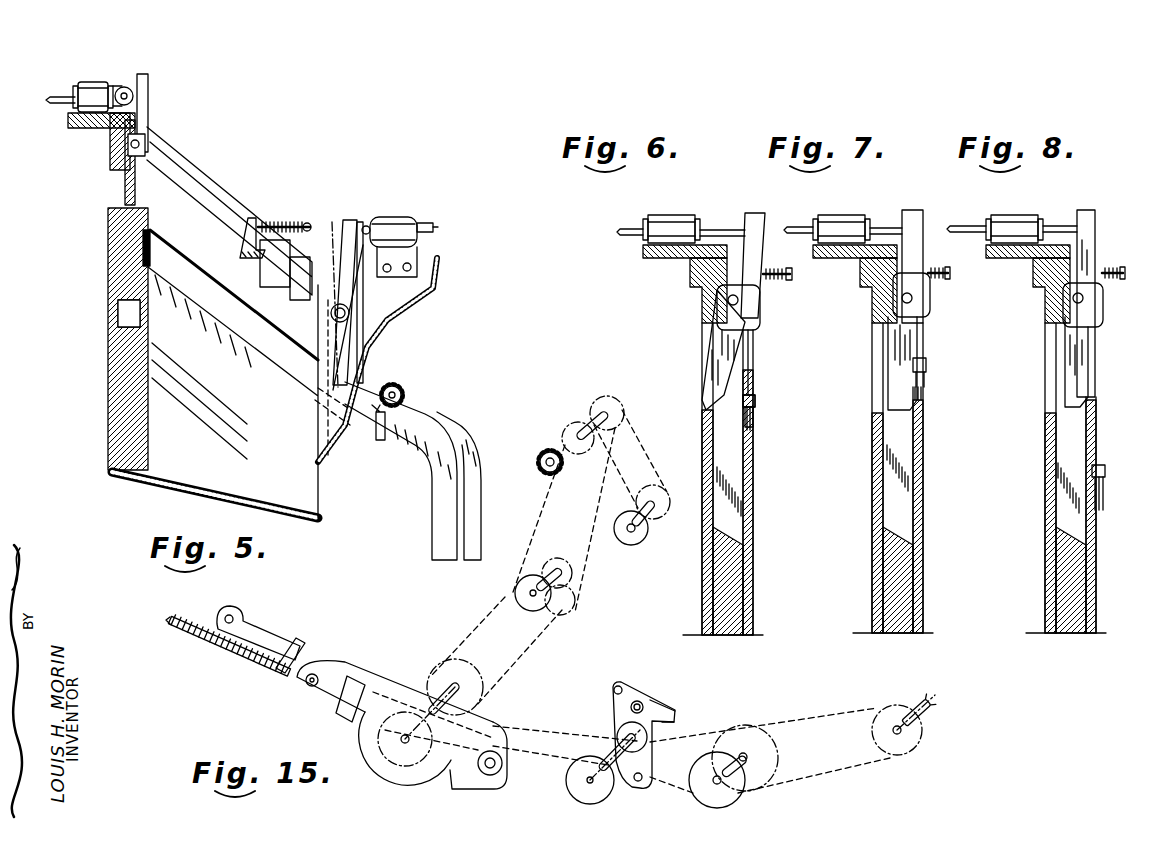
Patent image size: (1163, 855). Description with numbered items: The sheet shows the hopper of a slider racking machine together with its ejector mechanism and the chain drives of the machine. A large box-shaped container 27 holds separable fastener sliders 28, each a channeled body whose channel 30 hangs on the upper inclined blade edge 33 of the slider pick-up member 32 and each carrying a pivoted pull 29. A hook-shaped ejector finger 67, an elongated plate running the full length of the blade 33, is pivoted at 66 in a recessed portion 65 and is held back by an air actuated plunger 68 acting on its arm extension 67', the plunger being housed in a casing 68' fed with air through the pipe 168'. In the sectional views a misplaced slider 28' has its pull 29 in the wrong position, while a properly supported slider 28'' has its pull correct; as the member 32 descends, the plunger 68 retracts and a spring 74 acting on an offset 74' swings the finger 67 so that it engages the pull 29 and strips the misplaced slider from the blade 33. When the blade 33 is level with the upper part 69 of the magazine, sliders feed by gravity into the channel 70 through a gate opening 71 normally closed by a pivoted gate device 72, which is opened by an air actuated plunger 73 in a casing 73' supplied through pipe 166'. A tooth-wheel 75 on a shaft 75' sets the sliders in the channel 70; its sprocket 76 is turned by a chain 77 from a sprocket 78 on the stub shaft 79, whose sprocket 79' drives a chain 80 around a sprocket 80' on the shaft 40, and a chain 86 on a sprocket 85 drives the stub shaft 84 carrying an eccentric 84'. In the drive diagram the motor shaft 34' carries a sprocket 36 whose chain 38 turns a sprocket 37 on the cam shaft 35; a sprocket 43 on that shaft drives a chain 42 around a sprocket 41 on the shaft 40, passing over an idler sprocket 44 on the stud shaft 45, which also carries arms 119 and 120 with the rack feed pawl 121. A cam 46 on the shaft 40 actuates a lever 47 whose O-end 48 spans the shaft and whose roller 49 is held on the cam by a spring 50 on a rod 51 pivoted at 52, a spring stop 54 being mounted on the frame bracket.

In FIG. 5, the pipe 168' is at (52, 72).
In FIG. 6, the pipe 168' is at (612, 216).
In FIG. 5, the casing 68' is at (96, 77).
In FIG. 6, the casing 68' is at (669, 212).
In FIG. 7, the casing 68' is at (841, 212).
In FIG. 8, the casing 68' is at (1014, 211).
In FIG. 5, the air actuated plunger 68 is at (137, 72).
In FIG. 6, the air actuated plunger 68 is at (722, 209).
In FIG. 7, the air actuated plunger 68 is at (887, 208).
In FIG. 8, the air actuated plunger 68 is at (1060, 206).
In FIG. 5, the arm extension 67' is at (169, 113).
In FIG. 6, the arm extension 67' is at (758, 245).
In FIG. 5, the hook-shaped ejector finger 67 is at (102, 162).
In FIG. 6, the hook-shaped ejector finger 67 is at (694, 350).
In FIG. 7, the hook-shaped ejector finger 67 is at (876, 310).
In FIG. 8, the hook-shaped ejector finger 67 is at (1103, 308).
In FIG. 5, the recessed portion 65 is at (127, 313).
In FIG. 6, the recessed portion 65 is at (703, 277).
In FIG. 7, the recessed portion 65 is at (855, 284).
In FIG. 8, the recessed portion 65 is at (1050, 463).
In FIG. 6, the pivot of ejector finger 66 is at (728, 300).
In FIG. 7, the pivot of ejector finger 66 is at (910, 298).
In FIG. 8, the pivot of ejector finger 66 is at (1081, 298).
In FIG. 5, the container 27 is at (120, 360).
In FIG. 6, the container 27 is at (710, 580).
In FIG. 7, the container 27 is at (873, 570).
In FIG. 8, the container 27 is at (1045, 582).
In FIG. 5, the slider pick-up member 32 is at (155, 407).
In FIG. 6, the slider pick-up member 32 is at (754, 497).
In FIG. 7, the slider pick-up member 32 is at (925, 455).
In FIG. 8, the slider pick-up member 32 is at (1097, 560).
In FIG. 5, the inclined blade edge 33 is at (143, 237).
In FIG. 6, the inclined blade edge 33 is at (754, 428).
In FIG. 7, the inclined blade edge 33 is at (927, 390).
In FIG. 5, the separable fastener slider 28 is at (366, 445).
In FIG. 6, the separable fastener slider 28 is at (775, 399).
In FIG. 6, the misplaced slider 28' is at (768, 378).
In FIG. 7, the misplaced slider 28' is at (943, 357).
In FIG. 8, the properly supported slider 28'' is at (1117, 466).
In FIG. 6, the pull 29 is at (747, 427).
In FIG. 7, the pull 29 is at (913, 388).
In FIG. 8, the pull 29 is at (1104, 498).
In FIG. 6, the slider channel 30 is at (758, 418).
In FIG. 5, the magazine upper part 69 is at (423, 412).
In FIG. 5, the magazine channel 70 is at (448, 445).
In FIG. 5, the gate opening 71 is at (336, 282).
In FIG. 5, the pivoted gate device 72 is at (340, 333).
In FIG. 5, the air actuated plunger 73 is at (377, 277).
In FIG. 5, the casing 73' is at (406, 224).
In FIG. 5, the pipe 166' is at (462, 207).
In FIG. 5, the spring 74 is at (287, 197).
In FIG. 7, the spring 74 is at (939, 273).
In FIG. 8, the spring 74 is at (1113, 273).
In FIG. 5, the offset 74' is at (258, 212).
In FIG. 6, the offset 74' is at (785, 231).
In FIG. 5, the tooth-wheel 75 is at (411, 382).
In FIG. 15, the tooth-wheel 75 is at (547, 437).
In FIG. 15, the shaft 75' is at (585, 413).
In FIG. 15, the sprocket 76 is at (620, 416).
In FIG. 15, the chain 77 is at (551, 522).
In FIG. 15, the sprocket 78 is at (575, 562).
In FIG. 15, the stub shaft 79 is at (573, 590).
In FIG. 15, the sprocket 79' is at (578, 615).
In FIG. 15, the chain 80 is at (506, 651).
In FIG. 15, the sprocket 80' is at (490, 687).
In FIG. 15, the stub shaft 84 is at (627, 547).
In FIG. 15, the eccentric 84' is at (664, 521).
In FIG. 15, the sprocket 85 is at (643, 477).
In FIG. 15, the chain 86 is at (620, 455).
In FIG. 15, the shaft 40 is at (446, 673).
In FIG. 15, the sprocket 41 is at (426, 780).
In FIG. 15, the chain 42 is at (684, 742).
In FIG. 15, the sprocket 43 is at (698, 800).
In FIG. 15, the idler sprocket 44 is at (582, 800).
In FIG. 15, the stud shaft 45 is at (613, 740).
In FIG. 15, the cam 46 is at (390, 777).
In FIG. 15, the lever 47 is at (363, 667).
In FIG. 15, the O-end 48 is at (465, 782).
In FIG. 15, the roller 49 is at (487, 783).
In FIG. 15, the spring 50 is at (212, 645).
In FIG. 15, the rod 51 is at (170, 620).
In FIG. 15, the pivot 52 is at (314, 674).
In FIG. 15, the spring stop 54 is at (290, 641).
In FIG. 15, the arm 119 is at (622, 720).
In FIG. 15, the arm 120 is at (657, 783).
In FIG. 15, the rack feed pawl 121 is at (660, 705).
In FIG. 15, the motor shaft 34' is at (935, 712).
In FIG. 15, the cam shaft 35 is at (748, 800).
In FIG. 15, the sprocket 36 is at (873, 743).
In FIG. 15, the sprocket 37 is at (779, 760).
In FIG. 15, the chain 38 is at (817, 717).